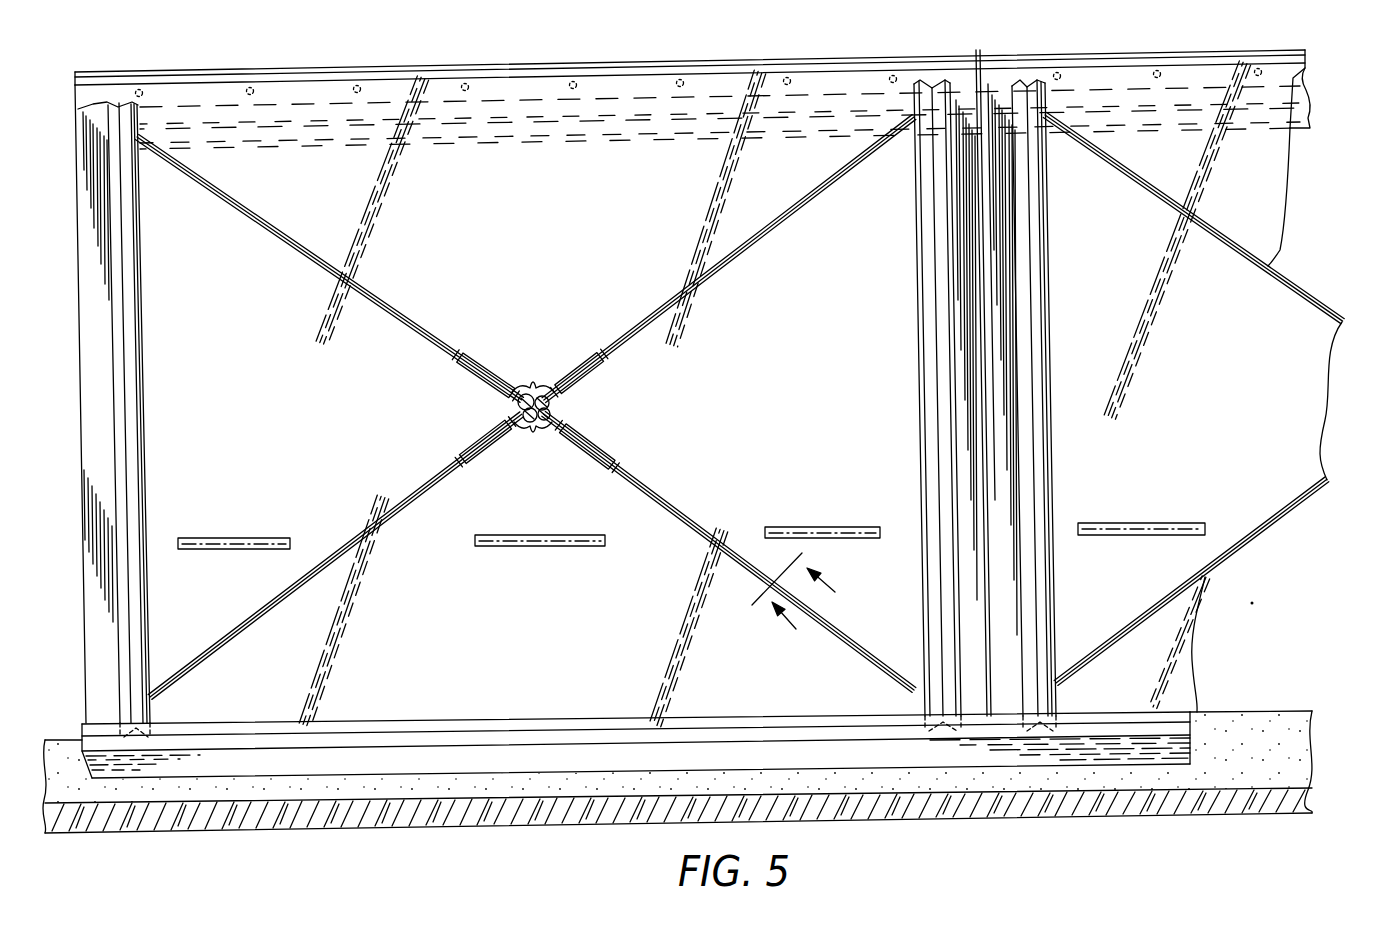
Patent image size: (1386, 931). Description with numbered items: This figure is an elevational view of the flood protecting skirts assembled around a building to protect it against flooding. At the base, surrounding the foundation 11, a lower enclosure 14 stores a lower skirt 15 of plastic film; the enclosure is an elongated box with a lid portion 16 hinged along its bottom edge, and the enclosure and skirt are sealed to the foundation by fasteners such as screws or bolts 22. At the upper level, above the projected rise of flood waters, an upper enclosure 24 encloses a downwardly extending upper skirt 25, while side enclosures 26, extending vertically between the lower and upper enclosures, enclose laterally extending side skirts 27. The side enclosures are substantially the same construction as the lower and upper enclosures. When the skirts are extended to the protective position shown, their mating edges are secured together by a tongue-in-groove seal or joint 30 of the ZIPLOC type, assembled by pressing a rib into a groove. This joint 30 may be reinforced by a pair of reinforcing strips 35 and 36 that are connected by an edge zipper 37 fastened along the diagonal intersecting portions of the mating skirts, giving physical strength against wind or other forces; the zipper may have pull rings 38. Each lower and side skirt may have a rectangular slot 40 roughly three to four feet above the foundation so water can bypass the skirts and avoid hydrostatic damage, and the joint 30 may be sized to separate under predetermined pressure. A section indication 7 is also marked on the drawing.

The section line 7- 7 is at (803, 603).
The foundation 11 is at (1262, 763).
The lower enclosure 14 is at (365, 772).
The lower skirt 15 is at (549, 630).
The lid portion 16 is at (1310, 128).
The screws or bolts 22 is at (352, 89).
The upper enclosure 24 is at (1308, 82).
The upper skirt 25 is at (519, 226).
The side enclosure 26 is at (85, 416).
The side skirt 27 is at (319, 424).
The tongue-in-groove seal or joint 30 is at (398, 310).
The reinforcing strip 35 is at (490, 372).
The reinforcing strip 36 is at (481, 381).
The edge zipper 37 is at (533, 408).
The pull ring 38 is at (551, 407).
The rectangular slot 40 is at (230, 540).